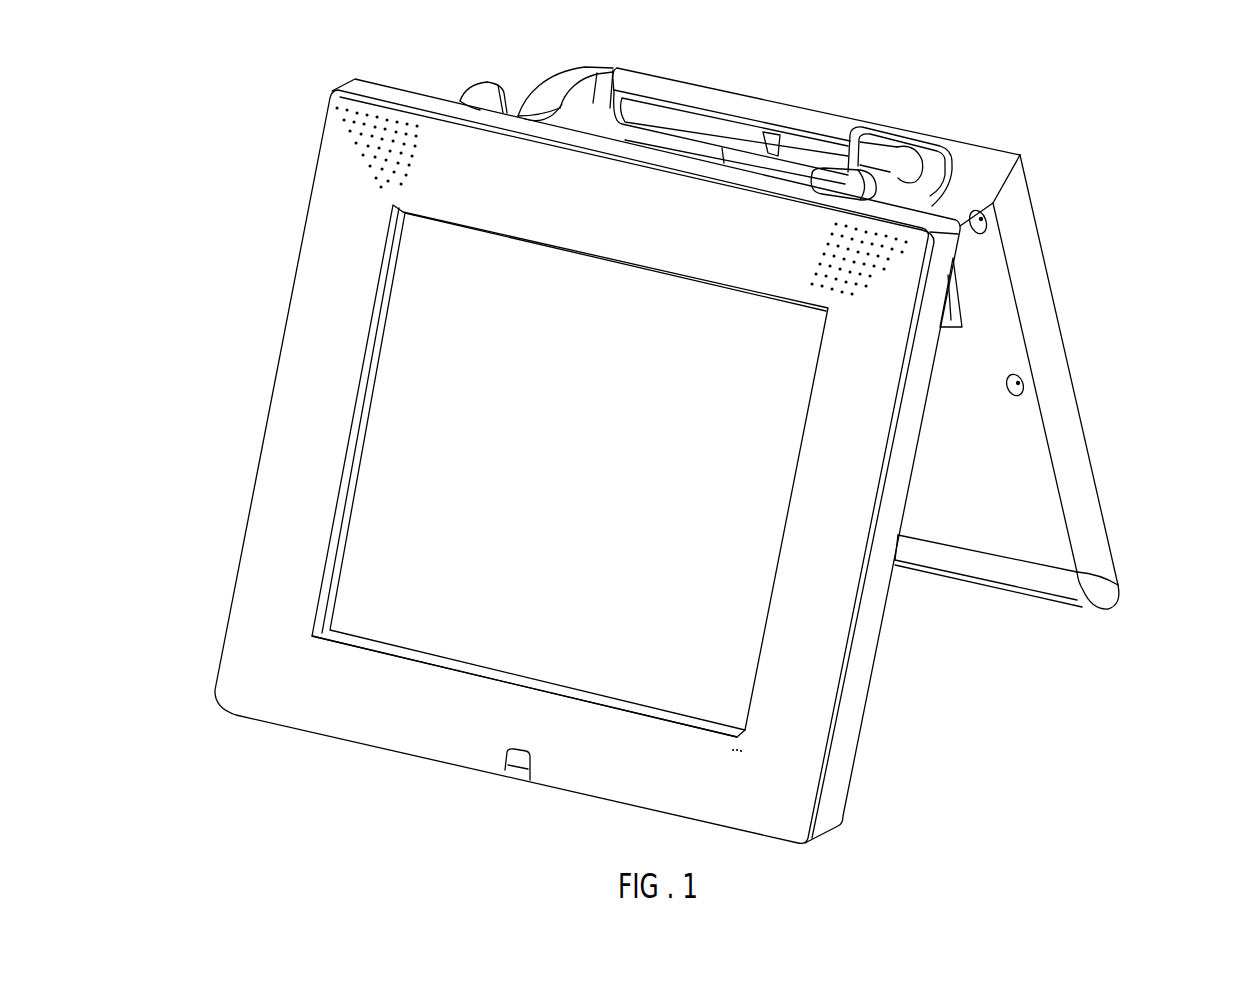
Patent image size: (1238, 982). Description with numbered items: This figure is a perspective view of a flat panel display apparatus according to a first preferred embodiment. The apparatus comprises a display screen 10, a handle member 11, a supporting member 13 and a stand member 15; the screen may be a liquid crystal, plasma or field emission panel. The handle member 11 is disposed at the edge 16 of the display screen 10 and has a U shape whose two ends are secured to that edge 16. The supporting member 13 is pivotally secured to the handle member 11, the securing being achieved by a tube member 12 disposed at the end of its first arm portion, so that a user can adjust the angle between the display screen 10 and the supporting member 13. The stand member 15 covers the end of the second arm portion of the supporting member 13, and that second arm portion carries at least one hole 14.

The display screen 10 is at (292, 268).
The handle member 11 is at (565, 68).
The tube member 12 is at (797, 113).
The supporting member 13 is at (1097, 236).
The hole 14 is at (985, 228).
The stand member 15 is at (1003, 590).
The edge 16 is at (518, 115).